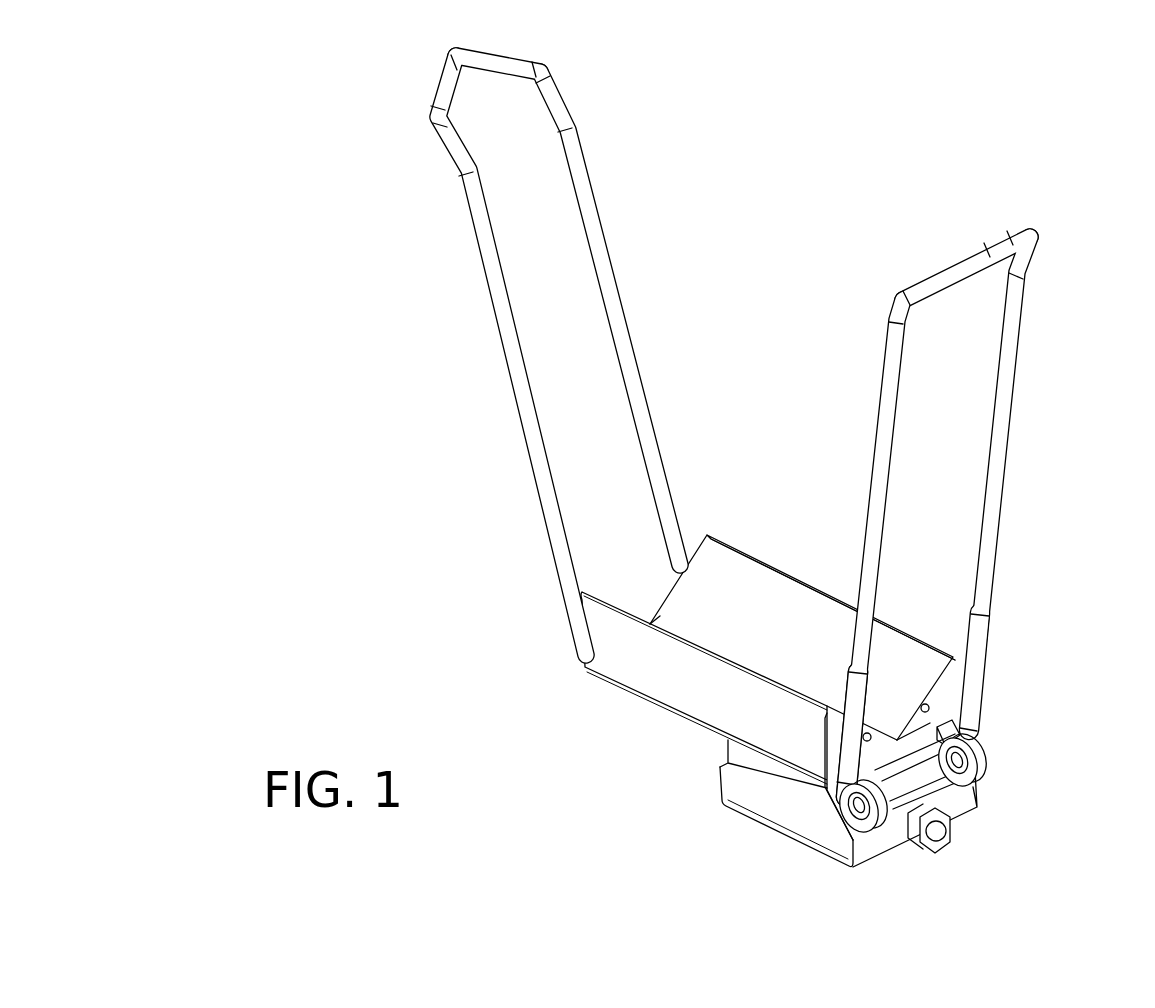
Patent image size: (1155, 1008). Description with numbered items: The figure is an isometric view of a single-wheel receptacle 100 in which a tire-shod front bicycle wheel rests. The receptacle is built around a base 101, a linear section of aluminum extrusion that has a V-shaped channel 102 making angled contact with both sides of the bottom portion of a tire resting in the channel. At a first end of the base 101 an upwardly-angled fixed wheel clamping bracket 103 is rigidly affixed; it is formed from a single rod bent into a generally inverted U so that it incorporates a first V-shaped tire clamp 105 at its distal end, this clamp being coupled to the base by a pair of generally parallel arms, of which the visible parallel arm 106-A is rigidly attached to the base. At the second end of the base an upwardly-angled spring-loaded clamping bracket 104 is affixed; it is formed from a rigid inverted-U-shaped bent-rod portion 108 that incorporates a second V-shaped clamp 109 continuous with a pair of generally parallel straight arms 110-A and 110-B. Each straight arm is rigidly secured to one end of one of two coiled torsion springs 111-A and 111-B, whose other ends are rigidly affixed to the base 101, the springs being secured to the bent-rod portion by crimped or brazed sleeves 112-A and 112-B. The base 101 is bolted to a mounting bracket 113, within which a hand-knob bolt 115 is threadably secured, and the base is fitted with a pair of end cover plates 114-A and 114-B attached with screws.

The single-wheel receptacle 100 is at (985, 101).
The base 101 is at (652, 683).
The V-shaped channel 102 is at (720, 637).
The fixed wheel clamping bracket 103 is at (543, 355).
The spring-loaded clamping bracket 104 is at (946, 517).
The first V-shaped tire clamp 105 is at (448, 82).
The parallel arm 106-A is at (515, 358).
The bent-rod portion 108 is at (990, 509).
The second V-shaped clamp 109 is at (955, 268).
The straight arm 110-A is at (885, 420).
The straight arm 110-B is at (1000, 418).
The coiled torsion spring 111-A is at (868, 830).
The coiled torsion spring 111-B is at (985, 768).
The sleeve 112-A is at (853, 703).
The sleeve 112-B is at (977, 670).
The mounting bracket 113 is at (785, 818).
The end cover plate 114-A is at (670, 587).
The end cover plate 114-B is at (937, 714).
The hand-knob bolt 115 is at (946, 832).